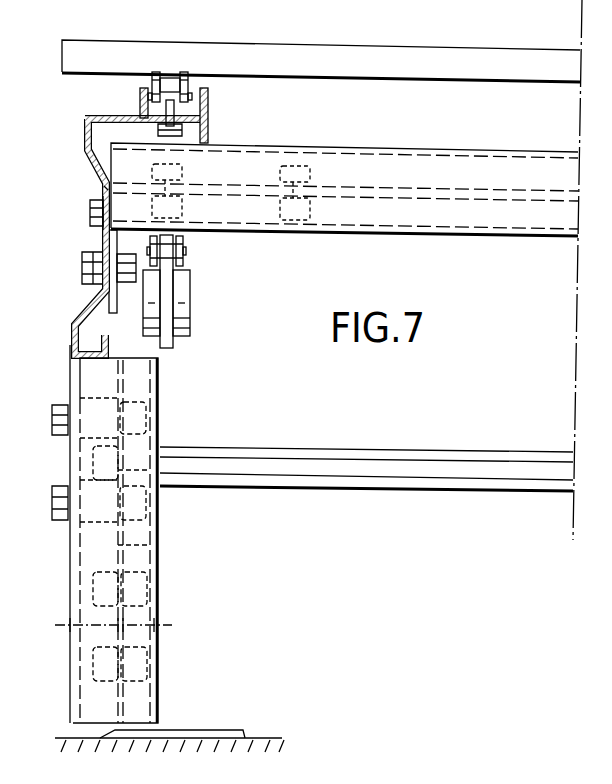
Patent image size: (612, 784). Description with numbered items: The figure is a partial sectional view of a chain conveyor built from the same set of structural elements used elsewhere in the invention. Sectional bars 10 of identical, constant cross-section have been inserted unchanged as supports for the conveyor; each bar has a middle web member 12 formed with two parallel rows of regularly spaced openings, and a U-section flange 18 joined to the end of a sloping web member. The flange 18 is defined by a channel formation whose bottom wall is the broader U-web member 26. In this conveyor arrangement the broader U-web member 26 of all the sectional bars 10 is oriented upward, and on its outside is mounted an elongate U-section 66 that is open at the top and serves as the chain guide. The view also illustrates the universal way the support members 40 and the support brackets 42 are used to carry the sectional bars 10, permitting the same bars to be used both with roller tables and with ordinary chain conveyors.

The sectional bar 10 is at (80, 145).
The middle web member 12 is at (100, 238).
The U-section flange 18 is at (85, 118).
The U-web member 26 is at (128, 118).
The support member 40 is at (74, 328).
The support bracket 42 is at (106, 190).
The U-section 66 is at (208, 118).